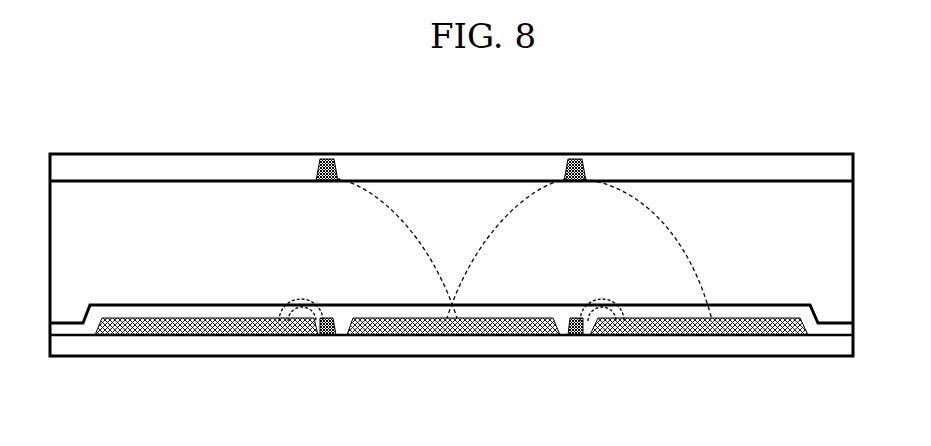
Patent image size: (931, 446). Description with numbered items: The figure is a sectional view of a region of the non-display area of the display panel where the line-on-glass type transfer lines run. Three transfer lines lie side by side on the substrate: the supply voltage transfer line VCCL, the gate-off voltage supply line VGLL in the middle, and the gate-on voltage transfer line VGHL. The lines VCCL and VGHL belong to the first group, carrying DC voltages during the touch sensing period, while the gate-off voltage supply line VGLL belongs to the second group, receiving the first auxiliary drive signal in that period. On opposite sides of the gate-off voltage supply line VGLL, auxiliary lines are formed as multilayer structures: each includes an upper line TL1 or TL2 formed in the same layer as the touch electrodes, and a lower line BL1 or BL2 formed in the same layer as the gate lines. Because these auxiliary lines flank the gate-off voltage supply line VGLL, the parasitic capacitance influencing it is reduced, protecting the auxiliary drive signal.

The upper line TL1 is at (322, 158).
The upper line TL2 is at (574, 158).
The supply voltage transfer line VCCL is at (318, 179).
The lower line BL1 is at (319, 337).
The gate-off voltage supply line VGLL is at (400, 337).
The lower line BL2 is at (572, 337).
The gate-on voltage transfer line VGHL is at (657, 337).